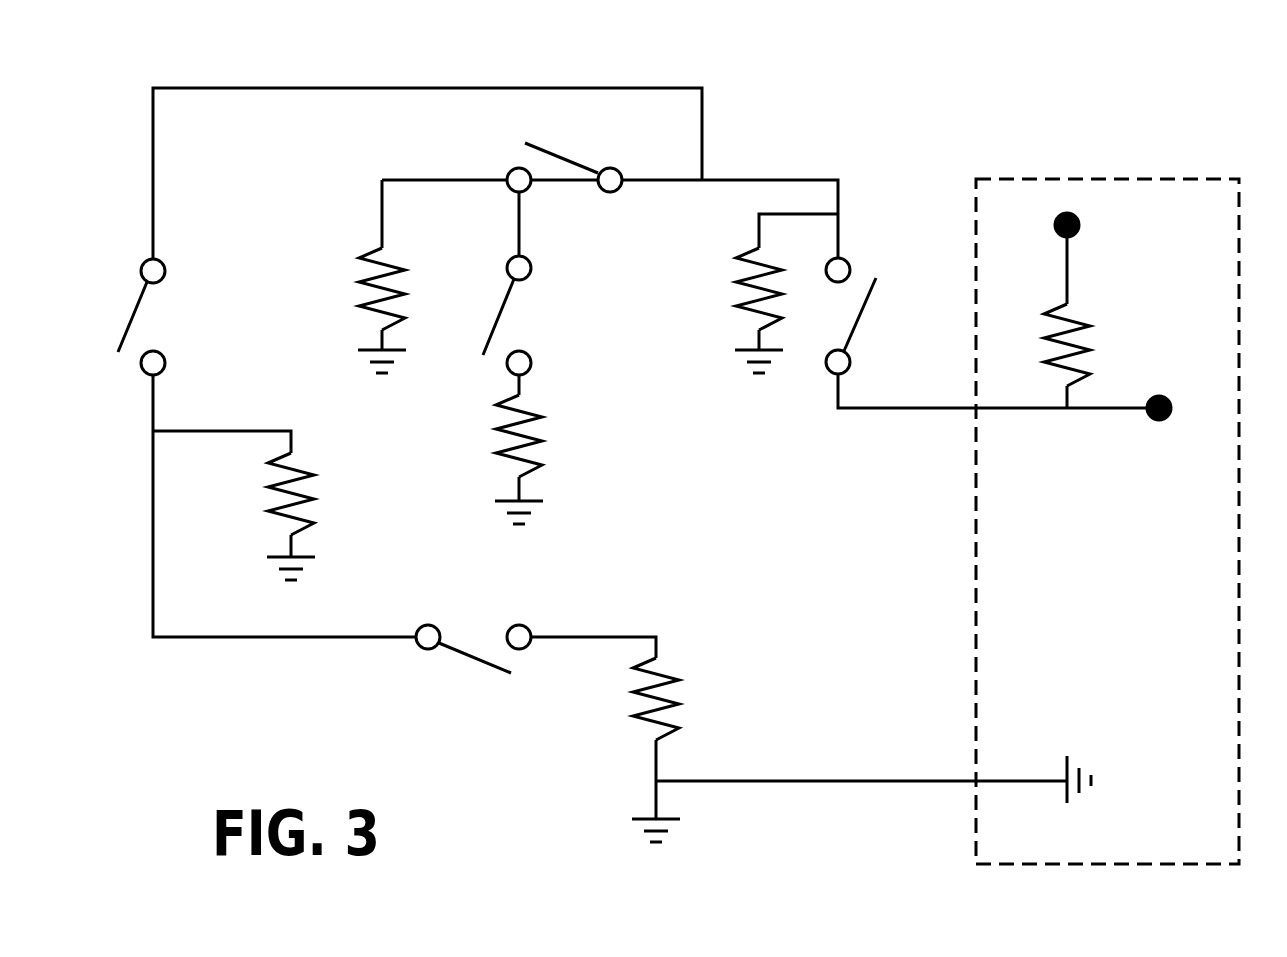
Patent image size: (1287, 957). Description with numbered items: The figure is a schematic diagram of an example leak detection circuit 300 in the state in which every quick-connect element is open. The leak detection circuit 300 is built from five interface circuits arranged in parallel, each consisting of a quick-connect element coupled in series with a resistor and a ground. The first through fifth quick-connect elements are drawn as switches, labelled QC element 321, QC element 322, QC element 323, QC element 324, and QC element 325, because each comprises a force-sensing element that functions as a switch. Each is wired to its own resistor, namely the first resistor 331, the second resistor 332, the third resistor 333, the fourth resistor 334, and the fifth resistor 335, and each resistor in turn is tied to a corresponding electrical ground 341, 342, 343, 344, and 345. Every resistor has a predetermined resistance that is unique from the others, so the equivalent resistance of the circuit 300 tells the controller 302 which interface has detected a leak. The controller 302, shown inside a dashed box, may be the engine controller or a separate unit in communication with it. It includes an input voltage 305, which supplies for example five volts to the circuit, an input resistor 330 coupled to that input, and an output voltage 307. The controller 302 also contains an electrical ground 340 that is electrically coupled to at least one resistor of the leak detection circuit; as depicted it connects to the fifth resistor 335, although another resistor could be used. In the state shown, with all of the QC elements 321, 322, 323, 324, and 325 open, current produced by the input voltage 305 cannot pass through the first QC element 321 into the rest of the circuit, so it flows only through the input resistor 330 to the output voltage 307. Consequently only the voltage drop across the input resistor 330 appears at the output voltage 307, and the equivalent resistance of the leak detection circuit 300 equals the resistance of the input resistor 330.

The leak detection circuit 300 is at (1208, 81).
The controller 302 is at (1185, 179).
The input voltage Vin 305 is at (1093, 229).
The output voltage Vout 307 is at (1158, 431).
The input resistor R0 330 is at (1099, 337).
The QC element QC1 321 is at (882, 300).
The QC element QC2 322 is at (569, 205).
The QC element QC3 323 is at (180, 318).
The QC element QC4 324 is at (547, 330).
The QC element QC5 325 is at (478, 612).
The resistor R1 331 is at (723, 292).
The resistor R2 332 is at (420, 285).
The resistor R3 333 is at (334, 489).
The resistor R4 334 is at (558, 427).
The resistor R5 335 is at (696, 692).
The electrical ground 340 is at (1073, 812).
The electrical ground 341 is at (757, 391).
The electrical ground 342 is at (400, 382).
The electrical ground 343 is at (295, 597).
The electrical ground 344 is at (519, 534).
The electrical ground 345 is at (656, 857).